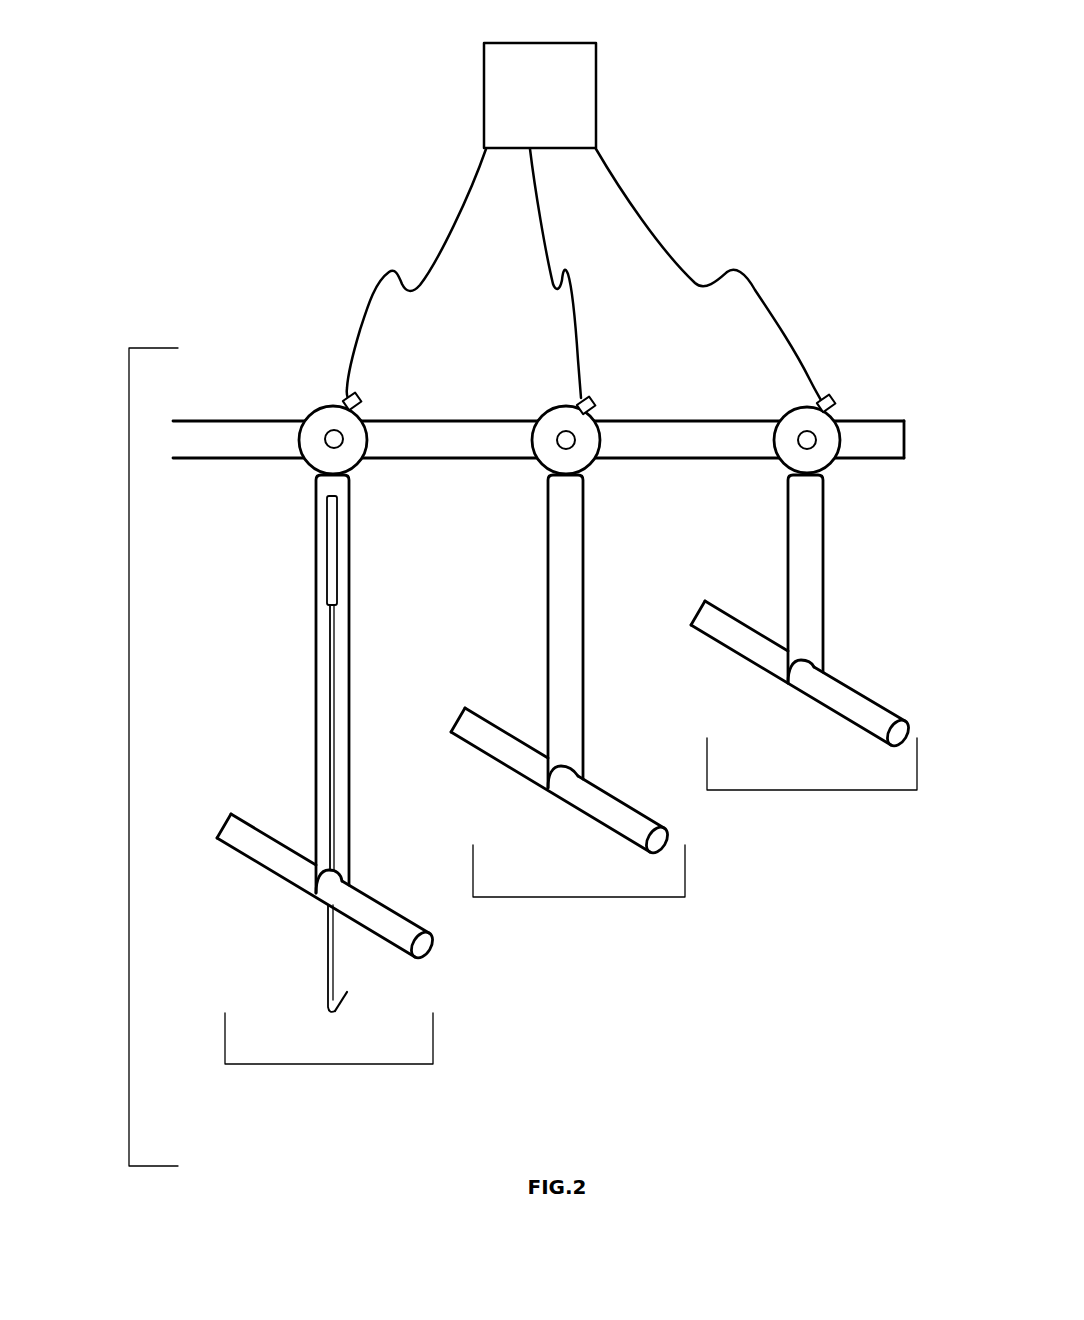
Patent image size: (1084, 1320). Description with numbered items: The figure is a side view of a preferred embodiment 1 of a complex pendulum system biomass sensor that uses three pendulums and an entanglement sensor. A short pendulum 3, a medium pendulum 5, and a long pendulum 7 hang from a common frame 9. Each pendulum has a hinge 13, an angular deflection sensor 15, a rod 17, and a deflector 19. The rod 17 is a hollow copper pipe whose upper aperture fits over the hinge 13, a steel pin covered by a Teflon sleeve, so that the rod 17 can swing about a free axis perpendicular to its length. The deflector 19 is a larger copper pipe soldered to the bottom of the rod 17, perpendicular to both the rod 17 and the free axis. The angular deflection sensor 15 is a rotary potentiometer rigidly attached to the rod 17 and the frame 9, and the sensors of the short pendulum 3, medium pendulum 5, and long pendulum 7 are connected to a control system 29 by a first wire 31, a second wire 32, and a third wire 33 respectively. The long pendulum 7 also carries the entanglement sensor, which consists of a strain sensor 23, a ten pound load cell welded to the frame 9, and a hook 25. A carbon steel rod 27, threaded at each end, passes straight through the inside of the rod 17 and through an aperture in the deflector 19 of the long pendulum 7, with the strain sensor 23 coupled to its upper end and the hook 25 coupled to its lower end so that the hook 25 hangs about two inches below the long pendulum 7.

The preferred embodiment 1 is at (129, 705).
The short pendulum 3 is at (812, 790).
The medium pendulum 5 is at (579, 897).
The long pendulum 7 is at (329, 1064).
The frame 9 is at (258, 418).
The hinge 13 is at (331, 436).
The angular deflection sensor 15 is at (364, 400).
The rod 17 is at (349, 675).
The deflector 19 is at (265, 832).
The strain sensor 23 is at (327, 515).
The hook 25 is at (343, 1003).
The carbon steel rod 27 is at (330, 690).
The control system 29 is at (540, 95).
The first wire 31 is at (398, 268).
The second wire 32 is at (563, 272).
The third wire 33 is at (737, 268).